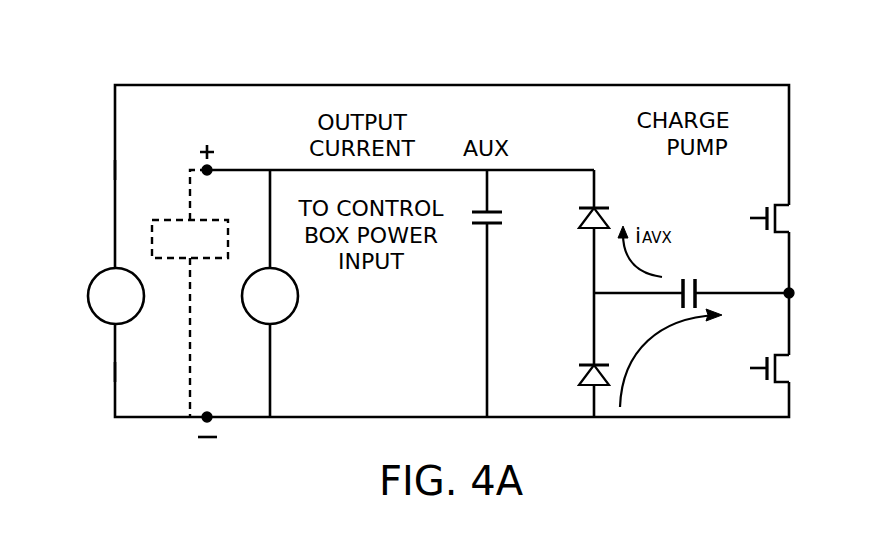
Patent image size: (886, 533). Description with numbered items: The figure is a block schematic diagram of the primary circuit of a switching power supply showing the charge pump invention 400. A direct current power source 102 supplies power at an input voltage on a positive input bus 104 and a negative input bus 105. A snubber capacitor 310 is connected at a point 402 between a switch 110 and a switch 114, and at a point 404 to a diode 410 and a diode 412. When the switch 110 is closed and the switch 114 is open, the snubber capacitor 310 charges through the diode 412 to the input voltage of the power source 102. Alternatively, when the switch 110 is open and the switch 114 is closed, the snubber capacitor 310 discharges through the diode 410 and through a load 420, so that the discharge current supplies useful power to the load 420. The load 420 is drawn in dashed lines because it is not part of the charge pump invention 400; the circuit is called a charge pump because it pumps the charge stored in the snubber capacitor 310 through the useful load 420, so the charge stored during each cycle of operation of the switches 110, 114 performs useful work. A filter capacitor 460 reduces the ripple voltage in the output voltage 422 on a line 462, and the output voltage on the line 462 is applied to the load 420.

The charge pump invention 400 is at (287, 40).
The positive input bus 104 is at (115, 170).
The negative input bus 105 is at (115, 372).
The direct current power source 102 is at (88, 296).
The line 462 is at (244, 168).
The load 420 is at (168, 218).
The output voltage 422 is at (256, 319).
The filter capacitor 460 is at (477, 228).
The diode 410 is at (588, 233).
The point 404 is at (592, 295).
The diode 412 is at (589, 363).
The snubber capacitor 310 is at (690, 278).
The switch 110 is at (784, 218).
The point 402 is at (794, 293).
The switch 114 is at (784, 370).